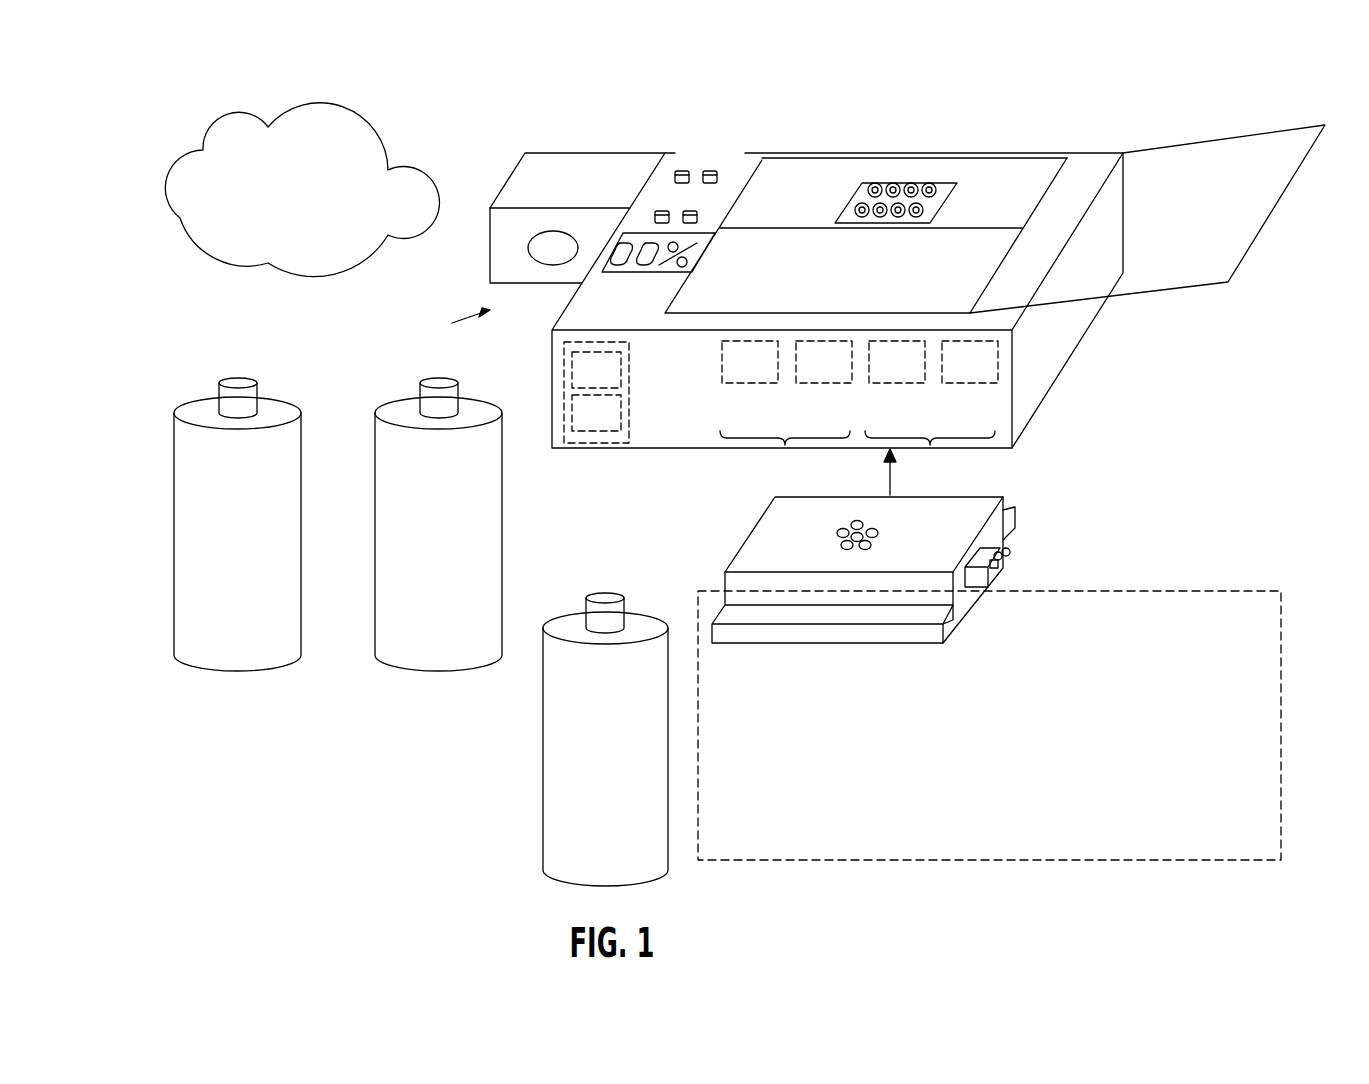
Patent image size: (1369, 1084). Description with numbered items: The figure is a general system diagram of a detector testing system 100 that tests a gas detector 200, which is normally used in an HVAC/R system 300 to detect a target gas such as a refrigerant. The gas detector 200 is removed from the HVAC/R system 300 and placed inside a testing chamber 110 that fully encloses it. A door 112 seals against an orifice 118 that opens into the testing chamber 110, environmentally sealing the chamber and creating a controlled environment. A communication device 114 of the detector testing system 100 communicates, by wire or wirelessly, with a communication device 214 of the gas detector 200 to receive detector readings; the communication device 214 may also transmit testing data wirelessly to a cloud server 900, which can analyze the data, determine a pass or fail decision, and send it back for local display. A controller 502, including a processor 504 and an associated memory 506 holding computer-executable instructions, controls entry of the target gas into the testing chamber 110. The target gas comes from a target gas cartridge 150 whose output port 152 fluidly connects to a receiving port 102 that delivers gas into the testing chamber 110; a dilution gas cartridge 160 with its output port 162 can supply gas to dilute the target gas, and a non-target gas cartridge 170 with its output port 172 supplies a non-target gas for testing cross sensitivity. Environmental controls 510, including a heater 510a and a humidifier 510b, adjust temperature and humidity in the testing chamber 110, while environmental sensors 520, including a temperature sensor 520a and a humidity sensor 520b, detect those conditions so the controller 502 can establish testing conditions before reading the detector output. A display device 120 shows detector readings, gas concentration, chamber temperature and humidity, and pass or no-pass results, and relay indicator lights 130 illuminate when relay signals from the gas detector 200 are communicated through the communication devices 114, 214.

The detector testing system 100 is at (463, 103).
The receiving port 102 is at (528, 248).
The testing chamber 110 is at (808, 170).
The door 112 is at (1256, 128).
The communication device 114 is at (928, 182).
The orifice 118 is at (1015, 158).
The display device 120 is at (635, 268).
The relay indicator light 130 is at (648, 173).
The target gas cartridge 150 is at (387, 548).
The output port 152 is at (440, 380).
The dilution gas cartridge 160 is at (187, 535).
The output port 162 is at (235, 380).
The non-target gas cartridge 170 is at (558, 735).
The output port 172 is at (605, 595).
The gas detector 200 is at (758, 528).
The communication device 214 is at (1003, 555).
The HVAC/R system 300 is at (1152, 607).
The controller 502 is at (607, 445).
The processor 504 is at (572, 418).
The memory 506 is at (572, 372).
The environmental controls 510 is at (785, 446).
The heater 510a is at (752, 384).
The humidifier 510b is at (822, 384).
The environmental sensors 520 is at (930, 446).
The temperature sensor 520a is at (897, 384).
The humidity sensor 520b is at (970, 384).
The cloud server 900 is at (160, 182).